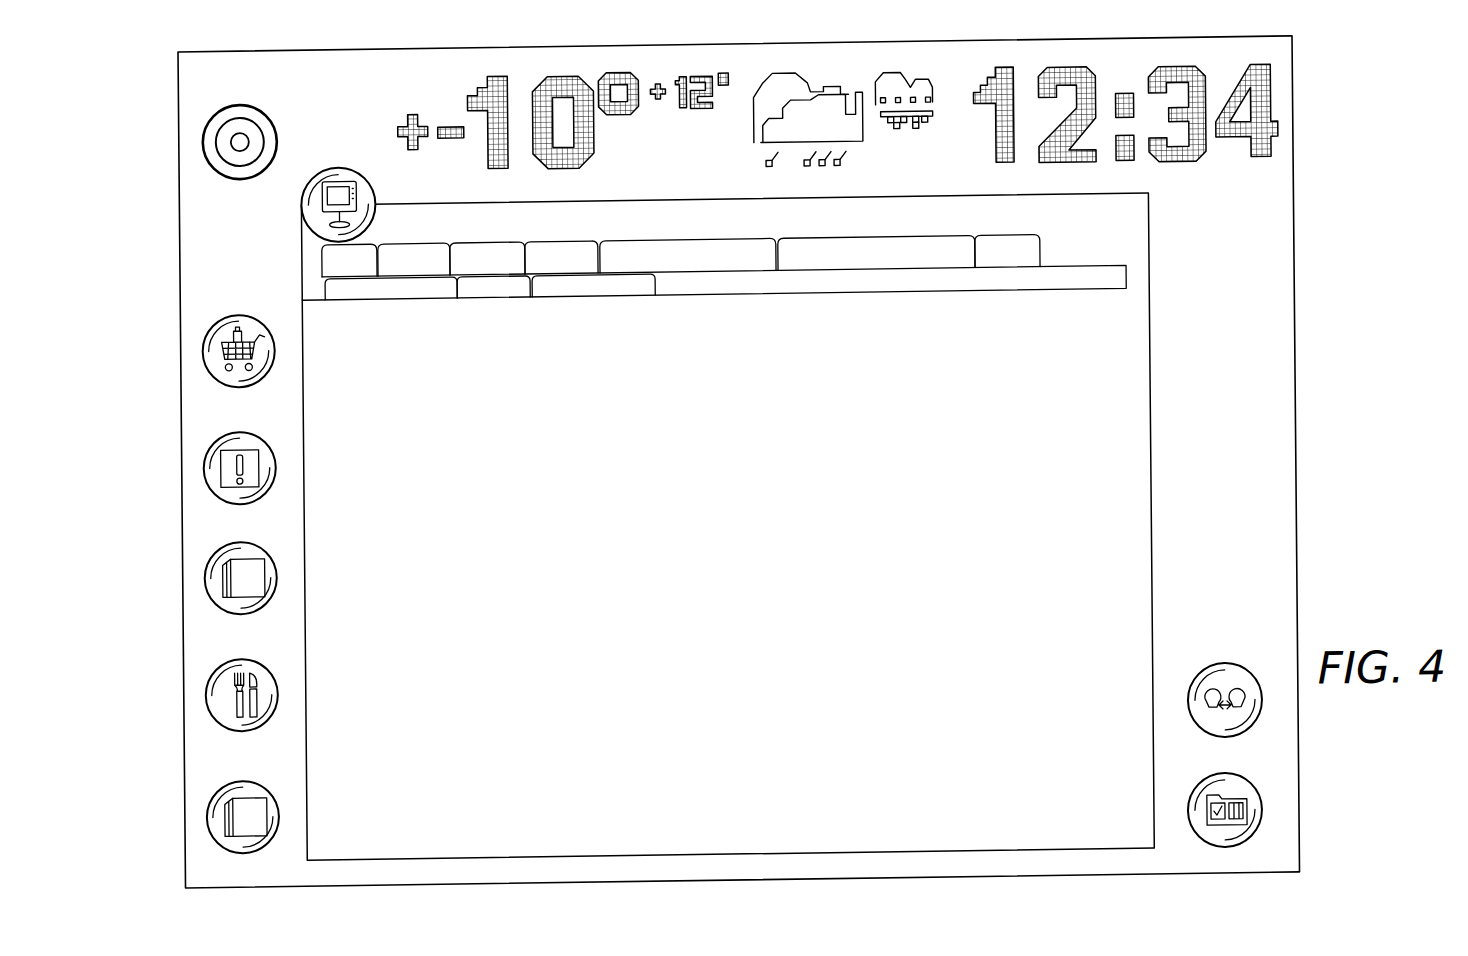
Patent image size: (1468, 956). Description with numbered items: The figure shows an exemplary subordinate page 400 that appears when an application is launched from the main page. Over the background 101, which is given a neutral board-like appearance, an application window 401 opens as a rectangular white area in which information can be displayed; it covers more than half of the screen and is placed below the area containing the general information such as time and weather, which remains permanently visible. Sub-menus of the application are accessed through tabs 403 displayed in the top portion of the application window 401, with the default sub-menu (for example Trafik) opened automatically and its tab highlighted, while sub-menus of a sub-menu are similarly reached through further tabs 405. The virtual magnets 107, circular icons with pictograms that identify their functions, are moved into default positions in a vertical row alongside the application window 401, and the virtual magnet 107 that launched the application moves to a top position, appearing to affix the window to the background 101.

The subordinate page 400 is at (268, 47).
The background 101 is at (1262, 444).
The application window 401 is at (1137, 252).
The tabs 403 is at (532, 247).
The tabs 405 is at (556, 302).
The virtual magnets 107 is at (1311, 836).